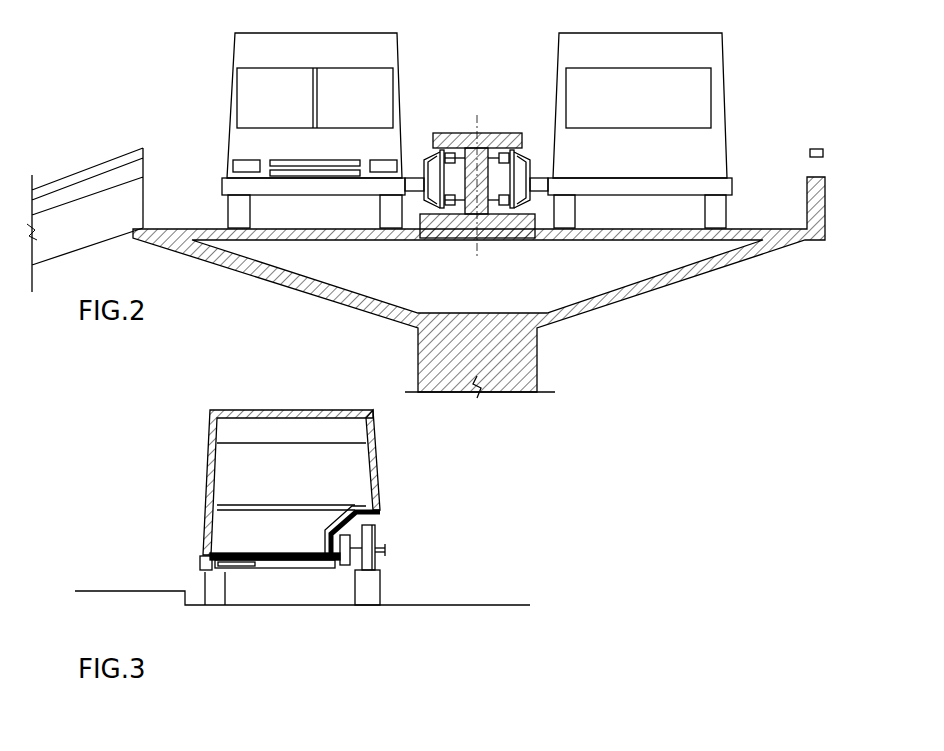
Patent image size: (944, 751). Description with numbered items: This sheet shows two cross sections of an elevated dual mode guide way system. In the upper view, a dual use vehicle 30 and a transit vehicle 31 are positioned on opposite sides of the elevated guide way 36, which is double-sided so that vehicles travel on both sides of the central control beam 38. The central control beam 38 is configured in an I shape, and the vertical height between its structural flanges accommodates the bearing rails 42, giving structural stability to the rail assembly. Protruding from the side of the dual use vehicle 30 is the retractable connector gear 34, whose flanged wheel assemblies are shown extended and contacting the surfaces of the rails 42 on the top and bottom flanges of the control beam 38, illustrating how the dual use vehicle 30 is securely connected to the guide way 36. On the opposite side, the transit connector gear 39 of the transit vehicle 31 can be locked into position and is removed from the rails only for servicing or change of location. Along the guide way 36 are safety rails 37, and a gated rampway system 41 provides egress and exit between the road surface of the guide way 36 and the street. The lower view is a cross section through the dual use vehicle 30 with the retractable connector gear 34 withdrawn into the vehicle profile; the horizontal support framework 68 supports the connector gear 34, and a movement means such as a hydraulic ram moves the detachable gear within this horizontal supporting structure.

In FIG. 2, the dual use vehicle 30 is at (312, 22).
In FIG. 3, the dual use vehicle 30 is at (290, 395).
In FIG. 2, the transit vehicle 31 is at (625, 22).
In FIG. 3, the retractable connector gear 34 is at (385, 533).
In FIG. 2, the elevated guide way 36 is at (620, 302).
In FIG. 2, the safety rails 37 is at (838, 182).
In FIG. 2, the central control beam 38 is at (455, 125).
In FIG. 2, the transit connector gear 39 is at (540, 185).
In FIG. 2, the rampway system 41 is at (112, 200).
In FIG. 2, the bearing rails 42 is at (505, 132).
In FIG. 3, the horizontal support framework 68 is at (235, 563).